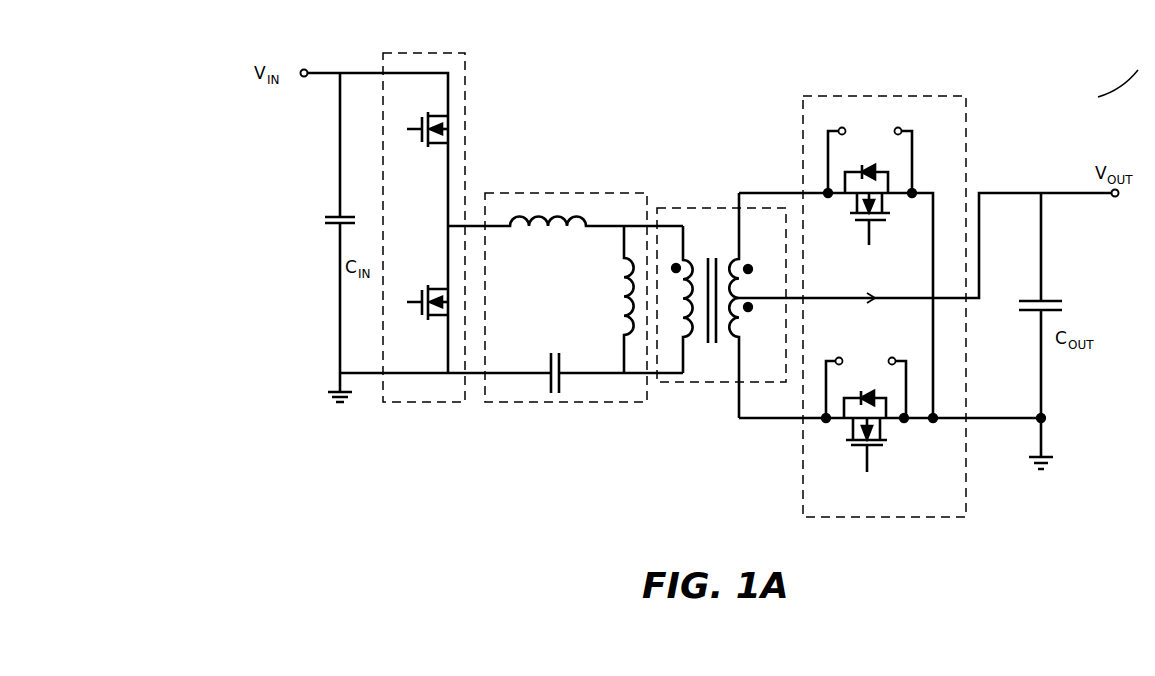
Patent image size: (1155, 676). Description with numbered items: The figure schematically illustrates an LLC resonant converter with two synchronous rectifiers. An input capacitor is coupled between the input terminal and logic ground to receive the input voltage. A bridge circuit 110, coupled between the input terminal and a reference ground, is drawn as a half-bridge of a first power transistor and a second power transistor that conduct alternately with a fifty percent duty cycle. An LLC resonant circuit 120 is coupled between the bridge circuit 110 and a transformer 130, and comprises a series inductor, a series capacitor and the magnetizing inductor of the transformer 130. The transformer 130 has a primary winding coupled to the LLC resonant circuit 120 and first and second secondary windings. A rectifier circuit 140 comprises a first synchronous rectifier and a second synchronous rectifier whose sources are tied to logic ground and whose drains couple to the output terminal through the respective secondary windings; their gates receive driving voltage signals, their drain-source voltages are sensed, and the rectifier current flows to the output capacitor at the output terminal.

The bridge circuit 110 is at (467, 110).
The LLC resonant circuit 120 is at (567, 192).
The transformer 130 is at (668, 208).
The rectifier circuit 140 is at (967, 110).